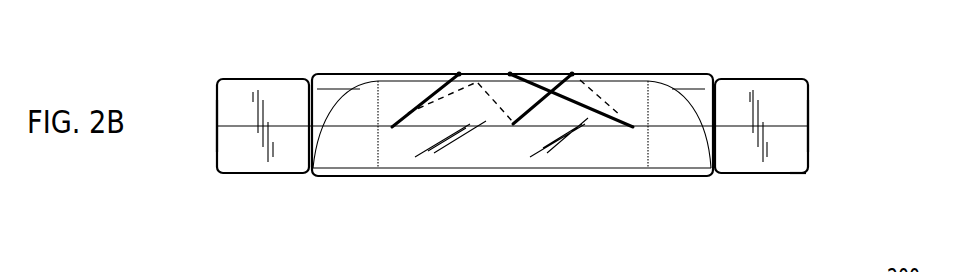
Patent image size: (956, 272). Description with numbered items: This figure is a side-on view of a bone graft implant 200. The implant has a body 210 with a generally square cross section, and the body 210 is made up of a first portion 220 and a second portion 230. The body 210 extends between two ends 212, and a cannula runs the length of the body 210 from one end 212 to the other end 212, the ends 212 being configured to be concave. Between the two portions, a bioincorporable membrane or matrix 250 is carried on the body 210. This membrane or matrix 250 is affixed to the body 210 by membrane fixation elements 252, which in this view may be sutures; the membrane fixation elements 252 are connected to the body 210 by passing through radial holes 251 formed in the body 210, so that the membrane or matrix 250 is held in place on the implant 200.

The bone graft implant 200 is at (855, 72).
The body 210 is at (217, 86).
The end 212 is at (217, 151).
The first portion 220 is at (740, 78).
The second portion 230 is at (808, 152).
The bioincorporable membrane or matrix 250 is at (345, 175).
The radial holes 251 is at (398, 175).
The membrane fixation elements 252 is at (442, 73).